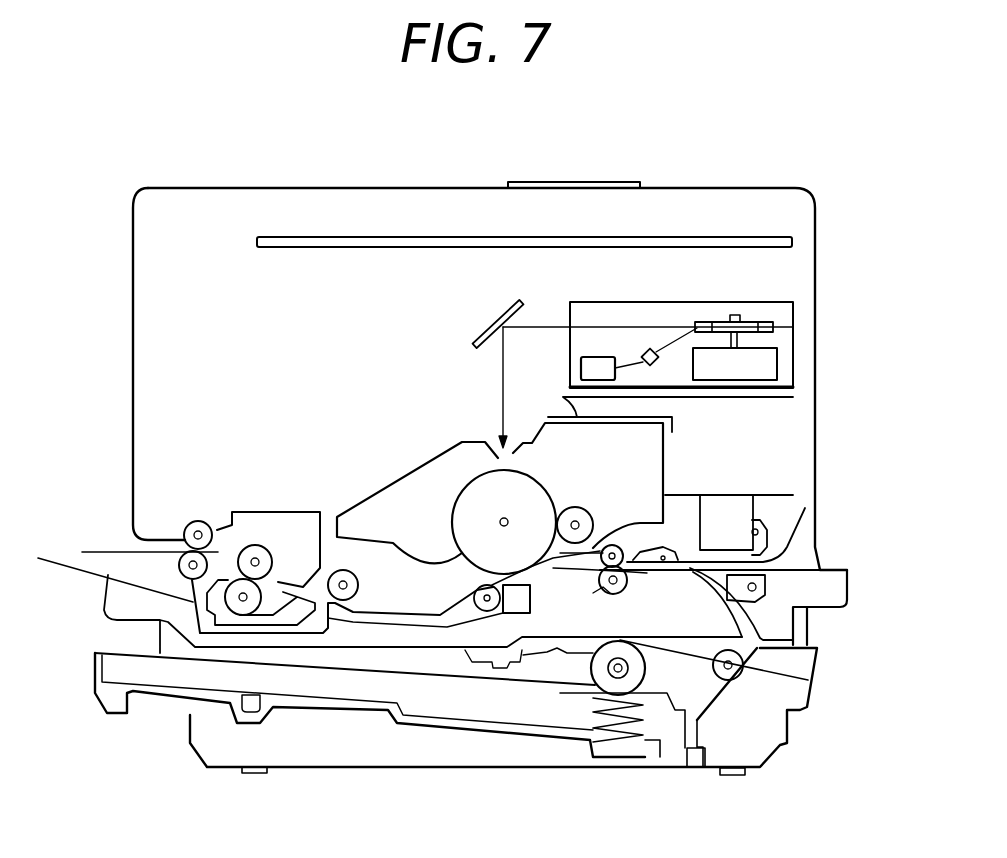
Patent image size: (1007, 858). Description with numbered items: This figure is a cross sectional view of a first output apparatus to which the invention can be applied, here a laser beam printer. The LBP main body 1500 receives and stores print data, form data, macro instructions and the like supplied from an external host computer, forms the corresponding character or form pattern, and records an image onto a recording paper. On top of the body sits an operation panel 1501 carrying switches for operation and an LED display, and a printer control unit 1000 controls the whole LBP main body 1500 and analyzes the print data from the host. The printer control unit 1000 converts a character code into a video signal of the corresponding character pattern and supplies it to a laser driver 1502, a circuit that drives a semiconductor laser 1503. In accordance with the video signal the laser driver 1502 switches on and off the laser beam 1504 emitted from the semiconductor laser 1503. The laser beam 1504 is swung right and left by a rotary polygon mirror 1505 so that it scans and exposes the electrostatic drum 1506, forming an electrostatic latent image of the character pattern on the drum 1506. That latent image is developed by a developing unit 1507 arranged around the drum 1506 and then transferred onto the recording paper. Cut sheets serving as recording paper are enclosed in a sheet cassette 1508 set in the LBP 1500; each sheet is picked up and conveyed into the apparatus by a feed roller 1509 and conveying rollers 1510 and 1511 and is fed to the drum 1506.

The LBP main body 1500 is at (735, 187).
The operation panel 1501 is at (588, 181).
The printer control unit 1000 is at (793, 239).
The laser driver 1502 is at (581, 363).
The semiconductor laser 1503 is at (657, 362).
The laser beam 1504 is at (630, 321).
The rotary polygon mirror 1505 is at (775, 327).
The electrostatic drum 1506 is at (472, 482).
The developing unit 1507 is at (365, 508).
The sheet cassette 1508 is at (90, 693).
The feed roller 1509 is at (600, 657).
The conveying roller 1510 is at (808, 680).
The conveying roller 1511 is at (612, 593).